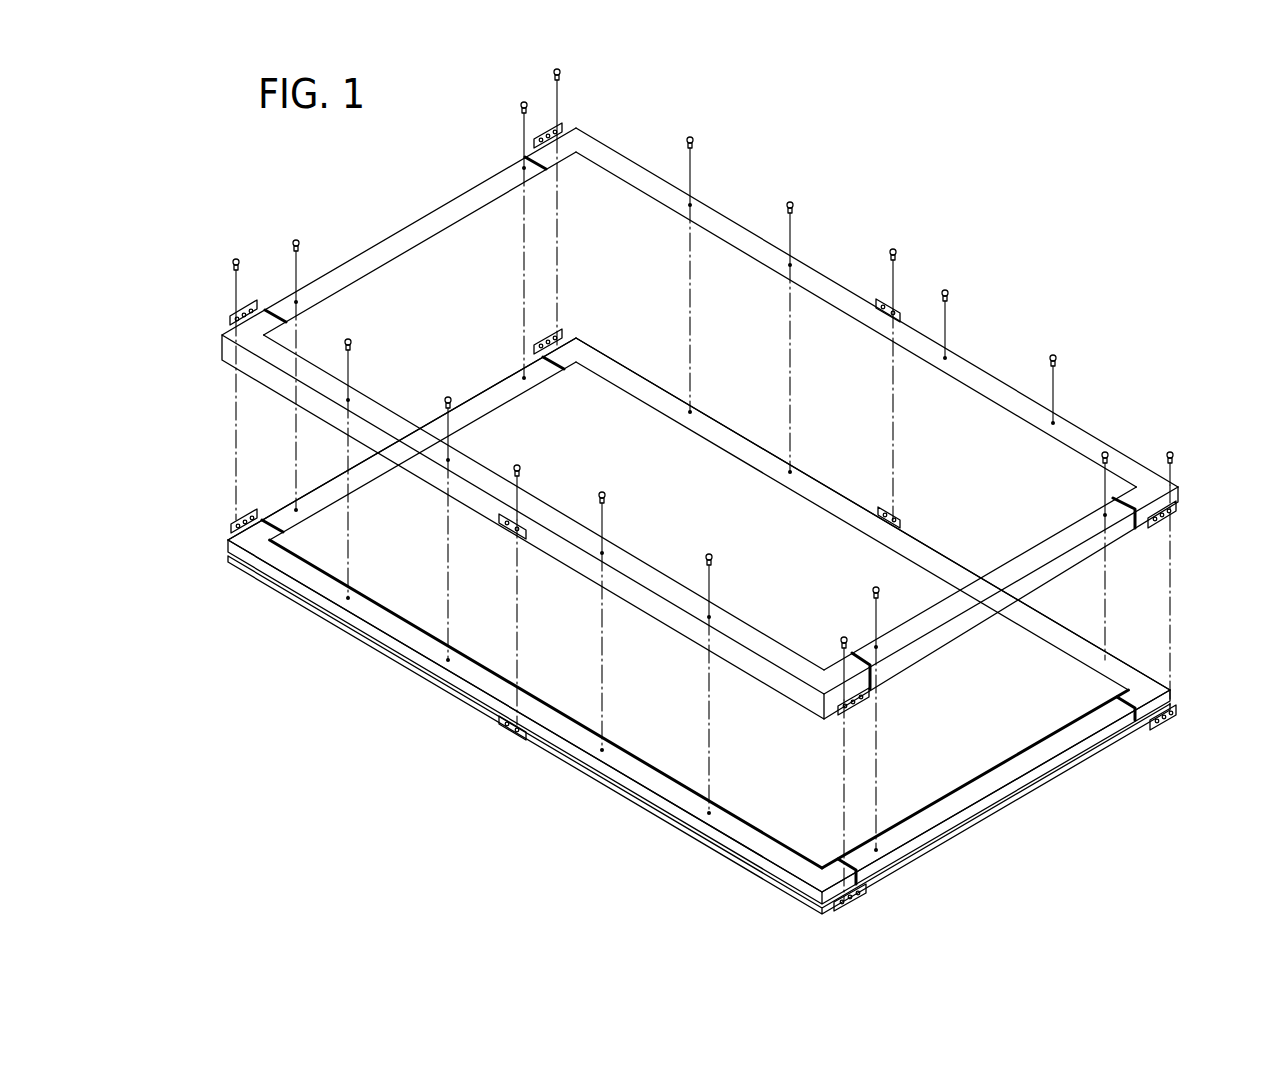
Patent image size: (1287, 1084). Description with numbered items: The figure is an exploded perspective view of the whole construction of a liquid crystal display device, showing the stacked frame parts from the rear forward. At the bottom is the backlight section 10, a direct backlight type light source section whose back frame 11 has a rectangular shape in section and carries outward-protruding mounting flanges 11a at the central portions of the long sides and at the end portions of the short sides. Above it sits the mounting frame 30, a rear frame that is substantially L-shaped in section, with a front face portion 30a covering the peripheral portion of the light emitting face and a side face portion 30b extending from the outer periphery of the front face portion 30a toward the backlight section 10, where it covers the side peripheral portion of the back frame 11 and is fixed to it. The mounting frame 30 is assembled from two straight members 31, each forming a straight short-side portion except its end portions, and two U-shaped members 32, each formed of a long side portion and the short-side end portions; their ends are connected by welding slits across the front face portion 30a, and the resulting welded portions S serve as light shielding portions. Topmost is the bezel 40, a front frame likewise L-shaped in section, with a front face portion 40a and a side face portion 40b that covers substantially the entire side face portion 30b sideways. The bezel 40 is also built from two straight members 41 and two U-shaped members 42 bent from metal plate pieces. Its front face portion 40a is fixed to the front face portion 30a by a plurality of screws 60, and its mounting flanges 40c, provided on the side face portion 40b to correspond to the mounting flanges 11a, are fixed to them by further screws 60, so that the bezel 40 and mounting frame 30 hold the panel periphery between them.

The backlight section 10 is at (716, 622).
The back frame 11 is at (1078, 756).
The mounting flange 11a is at (537, 345).
The mounting frame 30 is at (724, 617).
The front face portion 30a is at (987, 778).
The side face portion 30b is at (975, 815).
The straight member 31 is at (484, 398).
The U-shaped member 32 is at (810, 473).
The bezel 40 is at (710, 413).
The front face portion 40a is at (915, 628).
The side face portion 40b is at (930, 642).
The mounting flange 40c is at (535, 142).
The straight member 41 is at (700, 423).
The U-shaped member 42 is at (827, 277).
The screw 60 is at (563, 70).
The welded portion S is at (288, 318).